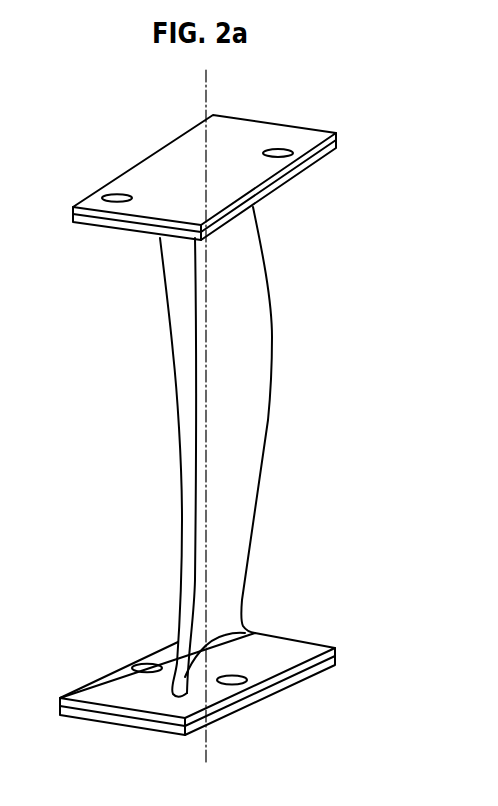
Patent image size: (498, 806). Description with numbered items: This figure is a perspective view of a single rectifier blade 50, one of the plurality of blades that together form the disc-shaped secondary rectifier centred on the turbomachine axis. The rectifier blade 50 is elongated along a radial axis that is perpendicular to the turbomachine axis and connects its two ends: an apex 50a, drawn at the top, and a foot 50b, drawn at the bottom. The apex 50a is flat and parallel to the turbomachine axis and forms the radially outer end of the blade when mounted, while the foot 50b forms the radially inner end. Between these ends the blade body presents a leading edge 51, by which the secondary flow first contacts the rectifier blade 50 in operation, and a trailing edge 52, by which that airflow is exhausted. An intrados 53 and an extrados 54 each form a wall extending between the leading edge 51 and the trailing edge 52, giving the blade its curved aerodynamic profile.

The rectifier blade 50 is at (352, 350).
The apex 50a is at (174, 161).
The foot 50b is at (113, 673).
The leading edge 51 is at (196, 422).
The trailing edge 52 is at (272, 298).
The intrados 53 is at (245, 415).
The extrados 54 is at (173, 352).